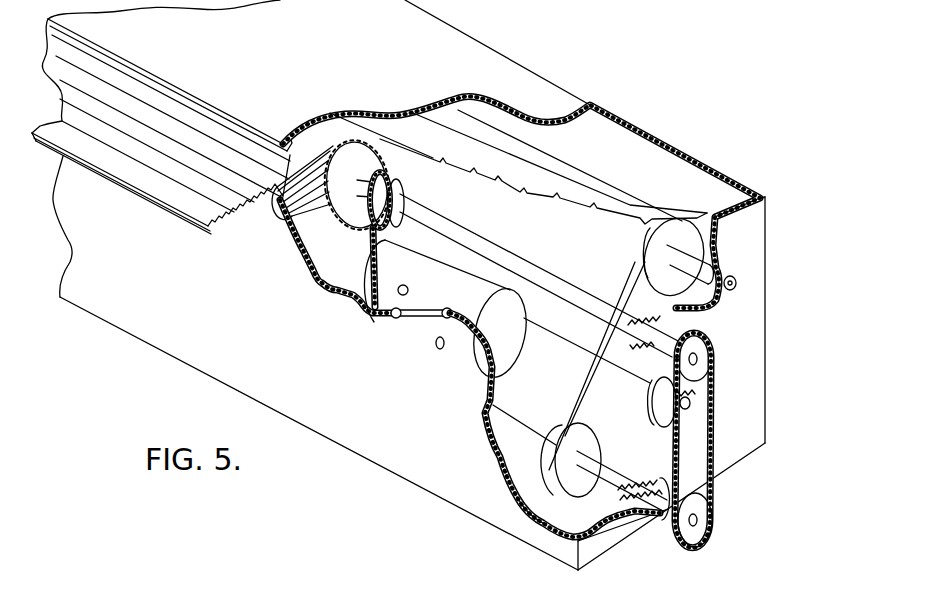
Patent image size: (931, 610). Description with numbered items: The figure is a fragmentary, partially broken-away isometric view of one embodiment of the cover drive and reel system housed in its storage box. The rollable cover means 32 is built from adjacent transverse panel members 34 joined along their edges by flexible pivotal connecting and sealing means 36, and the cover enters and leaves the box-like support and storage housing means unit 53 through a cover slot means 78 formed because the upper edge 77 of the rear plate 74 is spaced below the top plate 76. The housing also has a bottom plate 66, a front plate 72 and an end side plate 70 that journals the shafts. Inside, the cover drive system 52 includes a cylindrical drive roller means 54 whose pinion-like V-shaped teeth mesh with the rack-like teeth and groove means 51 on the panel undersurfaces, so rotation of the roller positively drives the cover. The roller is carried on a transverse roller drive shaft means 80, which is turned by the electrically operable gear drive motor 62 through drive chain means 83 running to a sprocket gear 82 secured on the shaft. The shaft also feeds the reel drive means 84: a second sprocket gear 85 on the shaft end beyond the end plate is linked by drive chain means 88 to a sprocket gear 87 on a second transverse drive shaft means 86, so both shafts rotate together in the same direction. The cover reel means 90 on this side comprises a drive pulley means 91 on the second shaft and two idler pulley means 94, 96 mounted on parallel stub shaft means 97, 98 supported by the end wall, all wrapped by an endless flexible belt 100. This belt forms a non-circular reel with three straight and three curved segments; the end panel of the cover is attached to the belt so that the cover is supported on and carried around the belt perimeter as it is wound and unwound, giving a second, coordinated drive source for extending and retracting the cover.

The cover means 32 is at (205, 237).
The cover slot means 78 is at (186, 92).
The upper edge of rear plate 77 is at (276, 196).
The transverse panel members 34 is at (317, 118).
The pivotal connecting and sealing means 36 is at (368, 137).
The top plate 76 is at (495, 68).
The support and storage housing means unit 53 is at (605, 103).
The rack-like teeth and groove means 51 is at (519, 184).
The front plate 72 is at (716, 180).
The cover reel means 90 is at (707, 205).
The end side plate 70 is at (755, 439).
The rear plate 74 is at (348, 438).
The sprocket gear 82 is at (408, 197).
The drive chain means 83 is at (362, 307).
The drive roller means 54 is at (305, 253).
The cover drive system 52 is at (359, 238).
The gear drive motor 62 is at (522, 330).
The roller drive shaft means 80 is at (535, 278).
The idler pulley means 96 is at (650, 272).
The stub shaft means 98 is at (698, 262).
The second sprocket gear 85 is at (702, 345).
The reel drive means 84 is at (714, 382).
The stub shaft means 97 is at (692, 403).
The idler pulley means 94 is at (652, 413).
The endless flexible belt 100 is at (590, 372).
The drive chain means 88 is at (712, 452).
The bottom plate 66 is at (718, 487).
The sprocket gear 87 is at (697, 540).
The second transverse drive shaft means 86 is at (503, 427).
The drive pulley means 91 is at (527, 513).